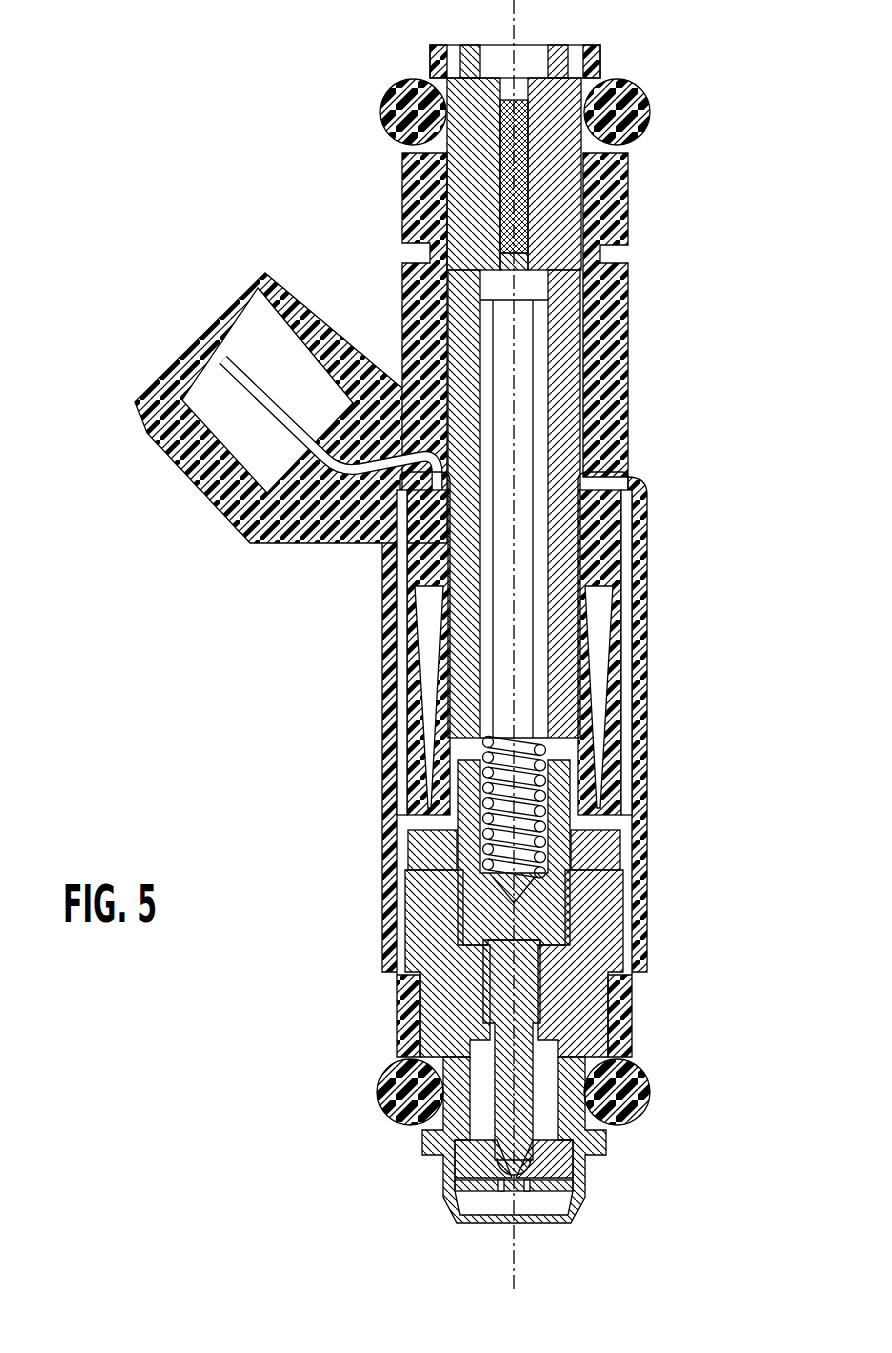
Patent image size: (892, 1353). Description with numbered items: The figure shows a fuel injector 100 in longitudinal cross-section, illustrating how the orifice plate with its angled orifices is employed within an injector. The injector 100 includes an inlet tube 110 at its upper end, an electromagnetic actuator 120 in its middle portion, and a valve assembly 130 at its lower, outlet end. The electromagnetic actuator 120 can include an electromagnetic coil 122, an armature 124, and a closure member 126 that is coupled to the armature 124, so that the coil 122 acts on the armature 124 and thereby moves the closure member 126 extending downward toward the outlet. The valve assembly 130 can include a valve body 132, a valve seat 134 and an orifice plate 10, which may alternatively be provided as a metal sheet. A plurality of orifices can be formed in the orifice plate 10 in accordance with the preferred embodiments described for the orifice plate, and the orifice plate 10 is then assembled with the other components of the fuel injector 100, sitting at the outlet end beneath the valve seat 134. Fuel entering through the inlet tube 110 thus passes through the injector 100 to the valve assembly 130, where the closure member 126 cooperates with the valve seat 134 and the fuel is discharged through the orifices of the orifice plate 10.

The fuel injector 100 is at (754, 179).
The inlet tube 110 is at (572, 302).
The electromagnetic actuator 120 is at (596, 625).
The electromagnetic coil 122 is at (603, 688).
The armature 124 is at (557, 838).
The closure member 126 is at (522, 1043).
The valve assembly 130 is at (672, 905).
The valve body 132 is at (570, 1068).
The valve seat 134 is at (558, 1167).
The orifice plate 10 is at (532, 1195).